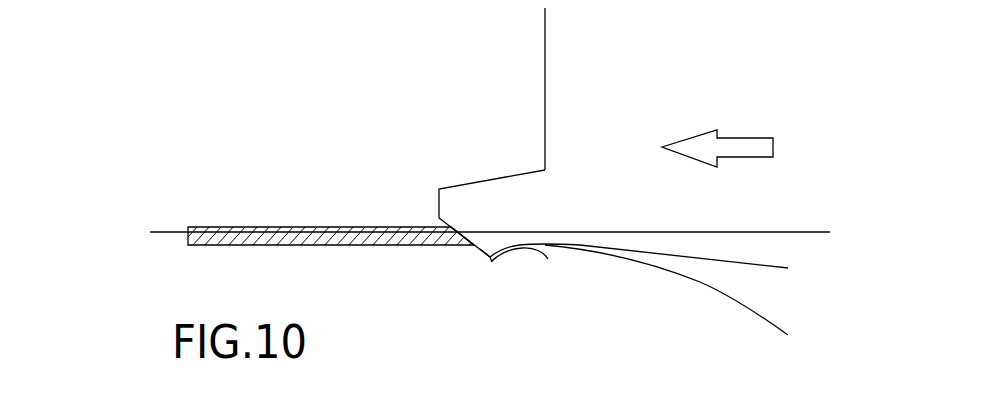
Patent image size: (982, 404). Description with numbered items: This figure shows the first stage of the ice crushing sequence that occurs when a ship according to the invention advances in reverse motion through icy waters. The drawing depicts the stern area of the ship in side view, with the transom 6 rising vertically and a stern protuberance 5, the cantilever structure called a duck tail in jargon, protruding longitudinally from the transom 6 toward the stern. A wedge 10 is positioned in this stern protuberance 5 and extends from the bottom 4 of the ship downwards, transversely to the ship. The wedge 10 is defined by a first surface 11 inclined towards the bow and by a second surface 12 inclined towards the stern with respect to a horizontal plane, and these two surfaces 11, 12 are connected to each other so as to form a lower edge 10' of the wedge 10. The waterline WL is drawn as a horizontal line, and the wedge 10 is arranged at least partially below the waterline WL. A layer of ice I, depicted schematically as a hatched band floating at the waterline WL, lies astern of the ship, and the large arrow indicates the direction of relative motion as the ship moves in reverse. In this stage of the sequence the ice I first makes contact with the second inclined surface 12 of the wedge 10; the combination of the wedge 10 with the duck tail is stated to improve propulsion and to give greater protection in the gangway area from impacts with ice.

The bottom 4 is at (748, 263).
The stern protuberance 5 is at (456, 164).
The transom 6 is at (543, 60).
The wedge 10 is at (465, 307).
The lower edge 10' is at (526, 305).
The first surface 11 is at (548, 259).
The second surface 12 is at (466, 246).
The waterline WL is at (154, 232).
The layer of ice I is at (222, 227).